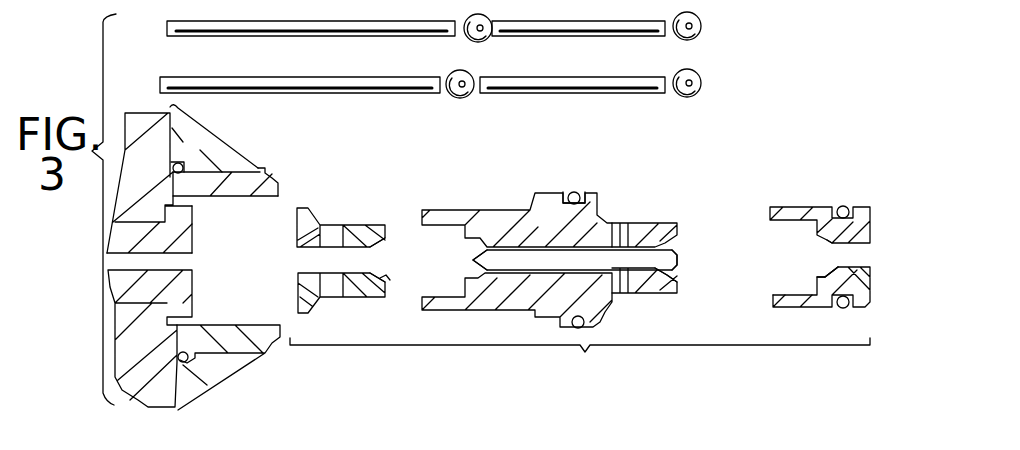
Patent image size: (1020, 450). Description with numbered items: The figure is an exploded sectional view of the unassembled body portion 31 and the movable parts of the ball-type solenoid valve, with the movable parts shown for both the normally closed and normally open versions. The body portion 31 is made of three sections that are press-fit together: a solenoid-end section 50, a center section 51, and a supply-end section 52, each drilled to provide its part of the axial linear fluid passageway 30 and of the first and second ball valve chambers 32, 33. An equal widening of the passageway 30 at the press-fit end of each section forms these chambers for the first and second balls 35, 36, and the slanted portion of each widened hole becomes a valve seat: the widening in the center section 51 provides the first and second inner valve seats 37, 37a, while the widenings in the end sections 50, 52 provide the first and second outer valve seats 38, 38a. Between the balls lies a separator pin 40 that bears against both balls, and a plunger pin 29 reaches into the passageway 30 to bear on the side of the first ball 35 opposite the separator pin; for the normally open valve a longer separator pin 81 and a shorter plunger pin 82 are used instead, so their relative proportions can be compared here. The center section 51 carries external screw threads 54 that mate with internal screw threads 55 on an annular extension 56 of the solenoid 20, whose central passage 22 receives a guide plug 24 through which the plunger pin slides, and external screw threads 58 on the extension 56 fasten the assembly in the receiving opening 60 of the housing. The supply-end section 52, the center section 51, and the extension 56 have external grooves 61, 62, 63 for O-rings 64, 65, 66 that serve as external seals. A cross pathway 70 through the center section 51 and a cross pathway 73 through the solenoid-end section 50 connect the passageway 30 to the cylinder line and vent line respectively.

The solenoid 20 is at (158, 342).
The central passage 22 is at (192, 257).
The guide plug 24 is at (152, 251).
The plunger pin 29 is at (372, 37).
The axial linear fluid passageway 30 is at (340, 250).
The body portion 31 is at (580, 361).
The first ball valve chamber 32 is at (389, 279).
The second ball valve chamber 33 is at (675, 277).
The first ball 35 is at (484, 41).
The second ball 36 is at (701, 26).
The first inner valve seat 37 is at (476, 262).
The second inner valve seat 37a is at (673, 252).
The first outer valve seat 38 is at (381, 262).
The second outer valve seat 38a is at (838, 268).
The separator pin 40 is at (620, 37).
The solenoid-end section 50 is at (370, 302).
The center section 51 is at (532, 306).
The supply-end section 52 is at (815, 308).
The external screw threads 54 is at (472, 190).
The internal screw threads 55 is at (238, 197).
The annular extension 56 is at (278, 183).
The external screw threads 58 is at (232, 170).
The receiving opening 60 is at (205, 383).
The external groove 61 is at (847, 206).
The external groove 62 is at (581, 193).
The external groove 63 is at (173, 168).
The O-ring 64 is at (838, 208).
The O-ring 65 is at (568, 192).
The O-ring 66 is at (180, 170).
The cross pathway 70 is at (621, 225).
The cross pathway 73 is at (333, 232).
The separator pin 81 is at (607, 93).
The plunger pin 82 is at (370, 93).